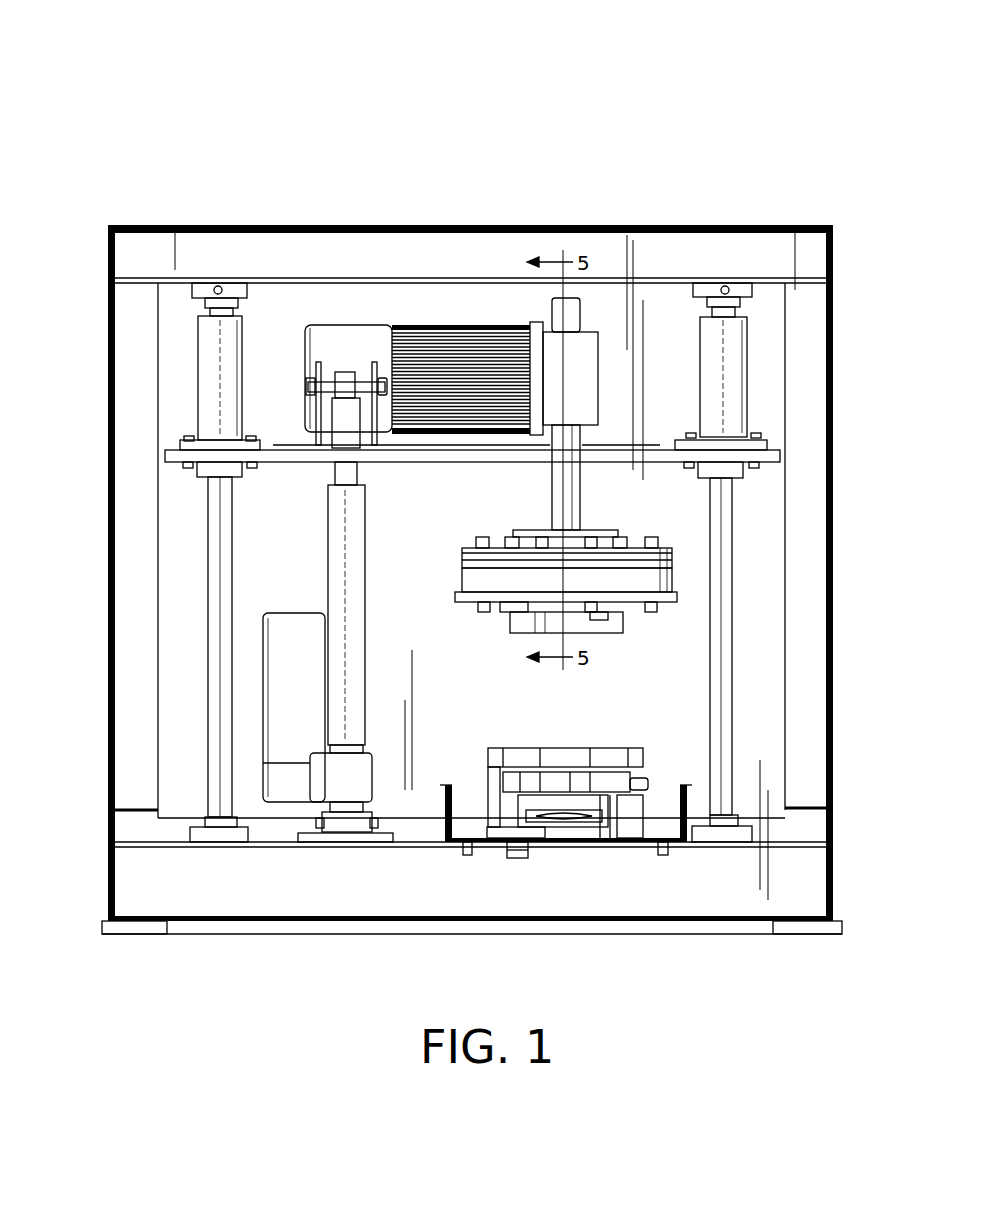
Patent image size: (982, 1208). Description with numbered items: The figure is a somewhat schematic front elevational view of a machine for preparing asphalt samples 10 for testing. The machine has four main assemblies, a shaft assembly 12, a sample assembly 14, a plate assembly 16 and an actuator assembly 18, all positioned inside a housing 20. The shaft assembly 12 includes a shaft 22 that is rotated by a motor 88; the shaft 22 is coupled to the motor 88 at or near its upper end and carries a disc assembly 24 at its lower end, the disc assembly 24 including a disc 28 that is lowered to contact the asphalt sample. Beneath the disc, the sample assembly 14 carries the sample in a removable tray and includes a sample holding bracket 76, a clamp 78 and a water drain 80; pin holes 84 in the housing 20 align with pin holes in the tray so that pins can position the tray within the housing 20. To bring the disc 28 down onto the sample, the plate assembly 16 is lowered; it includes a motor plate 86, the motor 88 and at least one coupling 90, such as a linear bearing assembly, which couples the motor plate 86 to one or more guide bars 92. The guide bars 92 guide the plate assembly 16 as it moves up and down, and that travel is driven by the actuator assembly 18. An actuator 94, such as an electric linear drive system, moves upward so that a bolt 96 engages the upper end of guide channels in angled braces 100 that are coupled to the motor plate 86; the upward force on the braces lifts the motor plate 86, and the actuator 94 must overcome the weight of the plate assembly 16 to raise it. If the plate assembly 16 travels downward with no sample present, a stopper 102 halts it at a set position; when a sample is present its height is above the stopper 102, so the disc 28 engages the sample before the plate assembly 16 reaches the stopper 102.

The machine for preparing asphalt samples 10 is at (170, 72).
The shaft assembly 12 is at (523, 489).
The sample assembly 14 is at (636, 866).
The plate assembly 16 is at (651, 431).
The actuator assembly 18 is at (257, 723).
The housing 20 is at (563, 224).
The shaft 22 is at (580, 332).
The disc assembly 24 is at (642, 519).
The disc 28 is at (603, 633).
The sample holding bracket 76 is at (453, 774).
The clamp 78 is at (505, 778).
The water drain 80 is at (517, 858).
The pin holes 84 is at (466, 845).
The motor plate 86 is at (165, 457).
The motor 88 is at (380, 325).
The coupling 90 is at (197, 335).
The guide bars 92 is at (208, 670).
The actuator 94 is at (327, 572).
The bolt 96 is at (307, 385).
The angled braces 100 is at (325, 418).
The stopper 102 is at (263, 690).